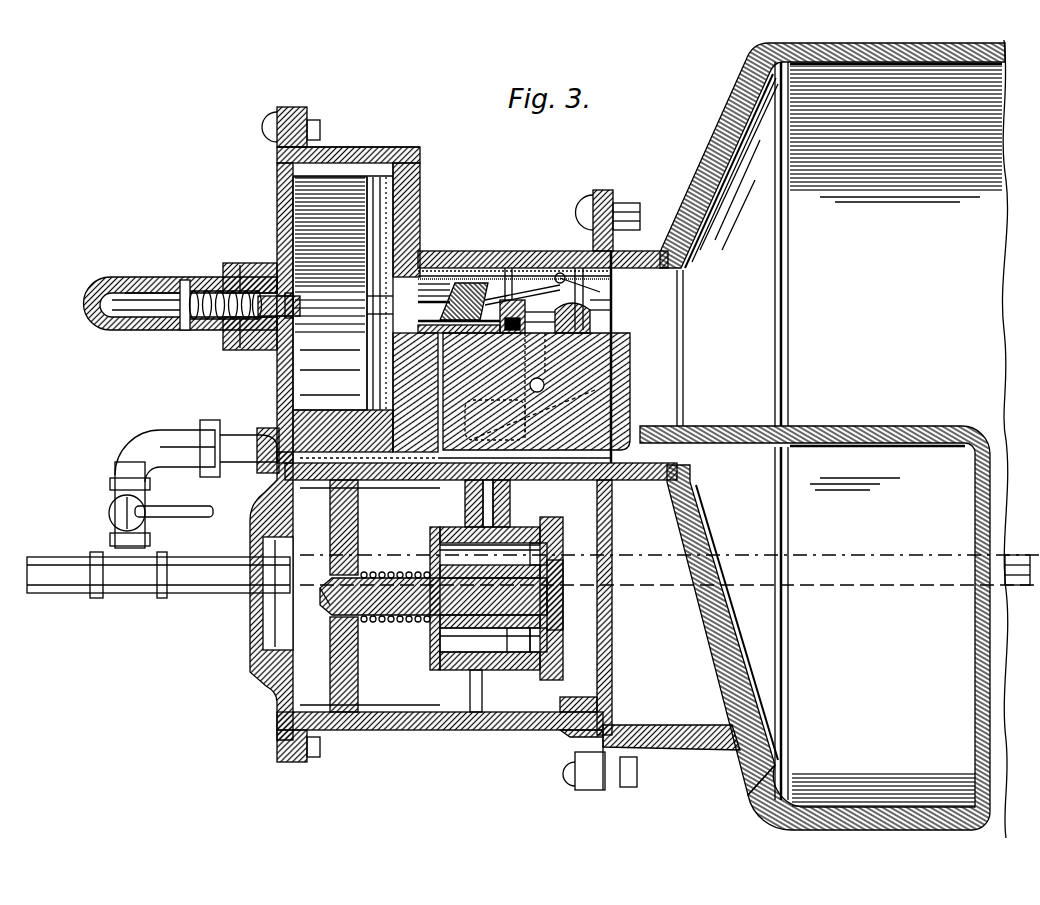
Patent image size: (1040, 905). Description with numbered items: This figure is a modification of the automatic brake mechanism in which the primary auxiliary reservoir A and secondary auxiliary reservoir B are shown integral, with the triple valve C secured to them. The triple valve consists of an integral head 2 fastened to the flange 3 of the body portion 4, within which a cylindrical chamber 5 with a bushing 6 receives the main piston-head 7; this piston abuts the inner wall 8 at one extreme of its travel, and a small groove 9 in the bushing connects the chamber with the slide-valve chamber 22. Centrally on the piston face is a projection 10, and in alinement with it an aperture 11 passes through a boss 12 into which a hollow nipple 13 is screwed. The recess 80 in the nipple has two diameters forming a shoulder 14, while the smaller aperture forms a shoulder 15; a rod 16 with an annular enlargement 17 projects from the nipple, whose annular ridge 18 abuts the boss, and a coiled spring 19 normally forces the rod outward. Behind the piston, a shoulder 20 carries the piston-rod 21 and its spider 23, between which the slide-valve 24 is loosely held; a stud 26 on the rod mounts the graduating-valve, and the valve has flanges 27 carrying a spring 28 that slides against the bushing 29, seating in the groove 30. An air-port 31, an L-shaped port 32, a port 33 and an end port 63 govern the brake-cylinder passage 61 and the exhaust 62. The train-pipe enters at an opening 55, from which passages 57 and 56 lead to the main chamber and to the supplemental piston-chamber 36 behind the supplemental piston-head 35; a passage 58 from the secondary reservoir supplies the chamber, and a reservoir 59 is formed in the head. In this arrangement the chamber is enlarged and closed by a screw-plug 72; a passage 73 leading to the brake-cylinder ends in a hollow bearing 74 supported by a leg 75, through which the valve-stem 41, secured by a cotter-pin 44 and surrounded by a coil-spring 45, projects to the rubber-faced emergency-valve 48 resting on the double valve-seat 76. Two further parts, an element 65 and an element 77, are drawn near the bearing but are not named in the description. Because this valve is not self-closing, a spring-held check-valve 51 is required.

The head 2 is at (277, 216).
The flange 3 is at (663, 328).
The body portion 4 is at (533, 408).
The cylindrical chamber 5 is at (330, 293).
The bushing 6 is at (365, 150).
The main piston-head 7 is at (368, 325).
The inner wall 8 is at (380, 362).
The groove 9 is at (385, 172).
The projection 10 is at (366, 298).
The aperture 11 is at (301, 312).
The boss 12 is at (251, 317).
The hollow nipple 13 is at (150, 330).
The shoulder 14 is at (186, 292).
The shoulder 15 is at (290, 298).
The rod 16 is at (165, 290).
The annular enlargement 17 is at (305, 294).
The annular ridge 18 is at (235, 265).
The coiled spring 19 is at (200, 290).
The shoulder 20 is at (464, 301).
The piston-rod 21 is at (515, 285).
The slide-valve chamber 22 is at (505, 280).
The spider 23 is at (611, 313).
The slide-valve 24 is at (579, 268).
The stud 26 is at (489, 305).
The flanges 27 is at (513, 389).
The spring 28 is at (558, 273).
The bushing 29 is at (470, 283).
The groove 30 is at (415, 392).
The air-port 31 is at (572, 318).
The L-shaped groove or port 32 is at (536, 391).
The port 33 is at (515, 327).
The supplemental piston-head 35 is at (358, 650).
The supplemental piston-chamber 36 is at (468, 589).
The valve-stem 41 is at (433, 596).
The cotter-pin 44 is at (320, 596).
The coil-spring 45 is at (395, 606).
The emergency-valve 48 is at (548, 656).
The check-valve 51 is at (635, 388).
The opening 55 is at (370, 456).
The passage 56 is at (482, 519).
The passage 57 is at (268, 440).
The passage 58 is at (525, 456).
The reservoir 59 is at (270, 615).
The brake-cylinder passage 61 is at (502, 386).
The exhaust 62 is at (550, 379).
The port 63 is at (567, 354).
The wall 65 is at (563, 591).
The screw-plug 72 is at (612, 530).
The passage 73 is at (494, 512).
The hollow bearing 74 is at (508, 652).
The leg 75 is at (545, 702).
The double valve-seat 76 is at (514, 640).
The piston 77 is at (485, 640).
The recess 80 is at (149, 303).
The primary auxiliary reservoir A is at (834, 439).
The secondary auxiliary reservoir B is at (815, 628).
The triple valve C is at (515, 250).